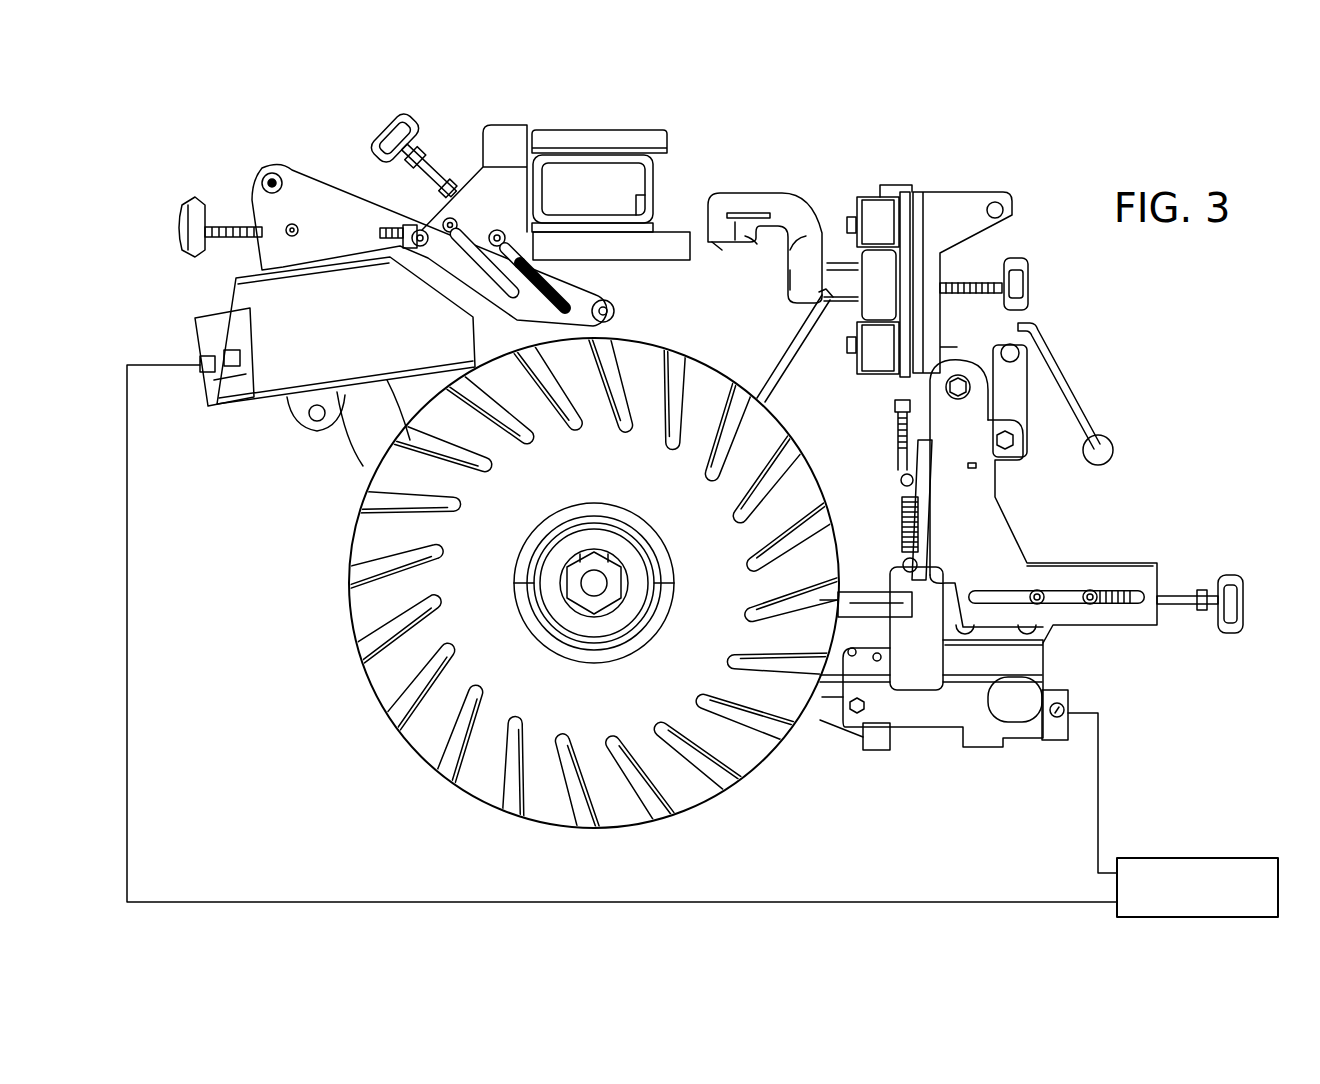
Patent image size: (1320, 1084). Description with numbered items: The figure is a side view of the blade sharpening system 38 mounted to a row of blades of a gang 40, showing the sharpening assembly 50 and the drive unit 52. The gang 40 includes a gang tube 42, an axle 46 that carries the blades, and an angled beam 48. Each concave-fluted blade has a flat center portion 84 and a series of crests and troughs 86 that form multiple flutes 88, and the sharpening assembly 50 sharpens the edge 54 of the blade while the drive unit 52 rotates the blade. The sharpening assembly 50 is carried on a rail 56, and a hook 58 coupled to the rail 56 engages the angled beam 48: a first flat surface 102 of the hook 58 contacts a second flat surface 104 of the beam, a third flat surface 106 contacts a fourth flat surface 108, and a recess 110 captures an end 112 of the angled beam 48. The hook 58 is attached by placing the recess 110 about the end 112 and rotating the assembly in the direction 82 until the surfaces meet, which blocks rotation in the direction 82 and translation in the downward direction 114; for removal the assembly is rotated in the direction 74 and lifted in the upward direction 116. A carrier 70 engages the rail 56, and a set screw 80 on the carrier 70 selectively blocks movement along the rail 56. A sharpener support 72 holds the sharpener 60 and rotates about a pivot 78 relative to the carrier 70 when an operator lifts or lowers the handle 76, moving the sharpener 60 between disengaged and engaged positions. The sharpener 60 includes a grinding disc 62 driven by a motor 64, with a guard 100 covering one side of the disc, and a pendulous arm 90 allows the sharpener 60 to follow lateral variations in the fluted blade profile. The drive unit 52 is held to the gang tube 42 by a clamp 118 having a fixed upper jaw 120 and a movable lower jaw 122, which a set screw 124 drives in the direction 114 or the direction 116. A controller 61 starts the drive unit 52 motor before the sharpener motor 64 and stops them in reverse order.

The blade sharpening system 38 is at (694, 112).
The gang 40 is at (258, 642).
The gang tube 42 is at (655, 190).
The axle 46 is at (590, 578).
The angled beam 48 is at (718, 240).
The sharpening assembly 50 is at (1130, 293).
The drive unit 52 is at (338, 172).
The edge 54 is at (560, 827).
The rail 56 is at (858, 252).
The hook 58 is at (765, 195).
The sharpener 60 is at (970, 767).
The controller 61 is at (1222, 857).
The grinding disc 62 is at (862, 606).
The motor 64 is at (915, 682).
The carrier 70 is at (940, 197).
The sharpener support 72 is at (1015, 537).
The direction 74 is at (1163, 464).
The handle 76 is at (1070, 388).
The pivot 78 is at (960, 398).
The set screw 80 is at (1000, 280).
The direction 82 is at (1188, 716).
The flat center portion 84 is at (483, 623).
The crests and troughs 86 is at (350, 620).
The flutes 88 is at (650, 358).
The pendulous arm 90 is at (1042, 440).
The guard 100 is at (878, 580).
The first flat surface 102 is at (826, 302).
The second flat surface 104 is at (790, 275).
The third flat surface 106 is at (788, 222).
The fourth flat surface 108 is at (757, 244).
The recess 110 is at (722, 216).
The end 112 is at (740, 222).
The downward direction 114 is at (848, 400).
The upward direction 116 is at (848, 97).
The clamp 118 is at (516, 124).
The fixed upper jaw 120 is at (601, 134).
The movable lower jaw 122 is at (585, 237).
The set screw 124 is at (400, 118).